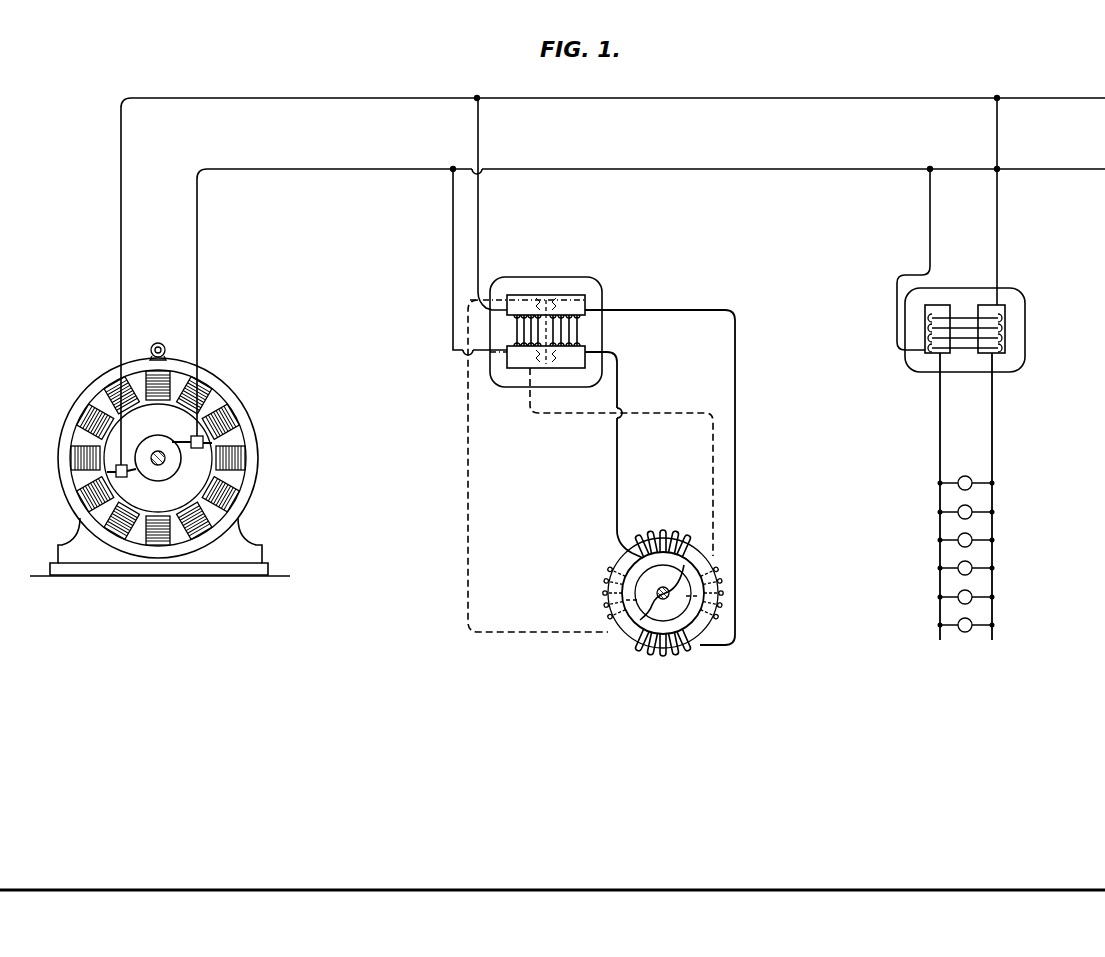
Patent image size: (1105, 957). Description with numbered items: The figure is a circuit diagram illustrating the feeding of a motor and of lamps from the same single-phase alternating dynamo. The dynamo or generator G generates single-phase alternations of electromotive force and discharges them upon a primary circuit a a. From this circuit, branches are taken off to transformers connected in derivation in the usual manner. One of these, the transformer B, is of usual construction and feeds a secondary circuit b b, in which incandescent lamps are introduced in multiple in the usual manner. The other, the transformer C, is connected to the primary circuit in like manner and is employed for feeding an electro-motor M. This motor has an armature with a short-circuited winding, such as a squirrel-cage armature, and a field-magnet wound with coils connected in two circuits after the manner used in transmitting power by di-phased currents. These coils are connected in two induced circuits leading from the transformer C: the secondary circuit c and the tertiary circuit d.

The primary circuit a is at (613, 272).
The secondary circuit b is at (962, 496).
The secondary circuit c is at (668, 477).
The tertiary circuit d is at (590, 466).
The dynamo or generator G is at (160, 459).
The transformer C is at (527, 242).
The transformer B is at (961, 235).
The electro-motor M is at (648, 593).